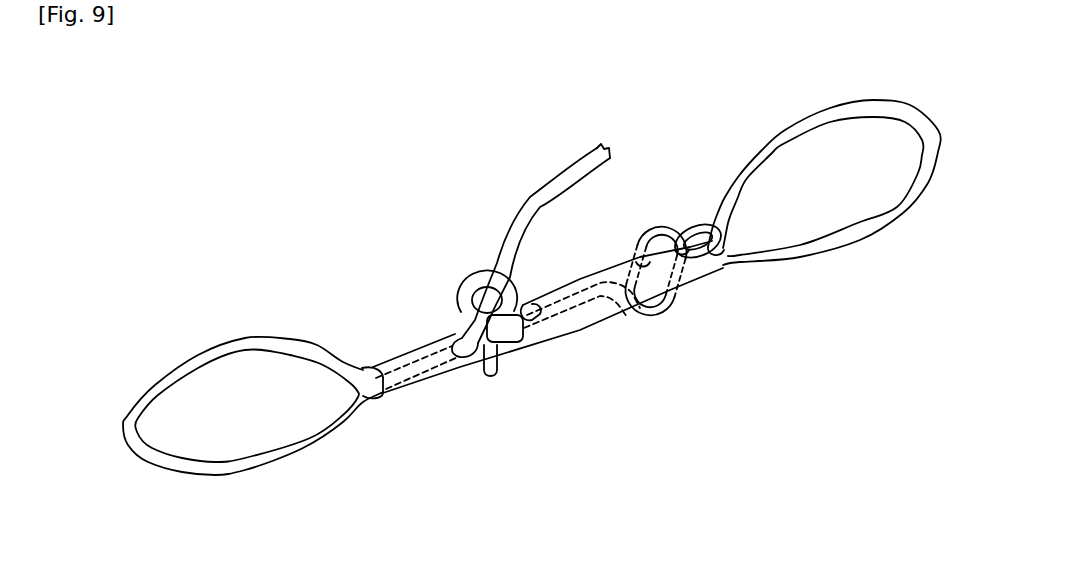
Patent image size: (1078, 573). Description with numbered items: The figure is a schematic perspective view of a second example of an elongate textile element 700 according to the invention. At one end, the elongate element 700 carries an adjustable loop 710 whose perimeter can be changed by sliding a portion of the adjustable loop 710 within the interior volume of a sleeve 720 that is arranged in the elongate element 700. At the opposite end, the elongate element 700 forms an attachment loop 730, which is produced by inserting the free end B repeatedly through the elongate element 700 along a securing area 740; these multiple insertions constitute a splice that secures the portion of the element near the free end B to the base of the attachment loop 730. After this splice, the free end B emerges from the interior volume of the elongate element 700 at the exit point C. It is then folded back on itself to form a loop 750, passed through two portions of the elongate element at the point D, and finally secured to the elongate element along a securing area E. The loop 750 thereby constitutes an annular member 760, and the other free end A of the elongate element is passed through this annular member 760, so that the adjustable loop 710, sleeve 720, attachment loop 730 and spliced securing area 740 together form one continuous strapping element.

The elongate element 700 is at (250, 195).
The adjustable loop 710 is at (239, 464).
The sleeve 720 is at (405, 383).
The attachment loop 730 is at (813, 127).
The securing area 740 is at (738, 290).
The loop 750 is at (473, 280).
The annular member 760 is at (494, 245).
The free end A is at (598, 147).
The free end B is at (500, 364).
The exit point C is at (520, 308).
The point D is at (458, 335).
The securing area E is at (482, 360).